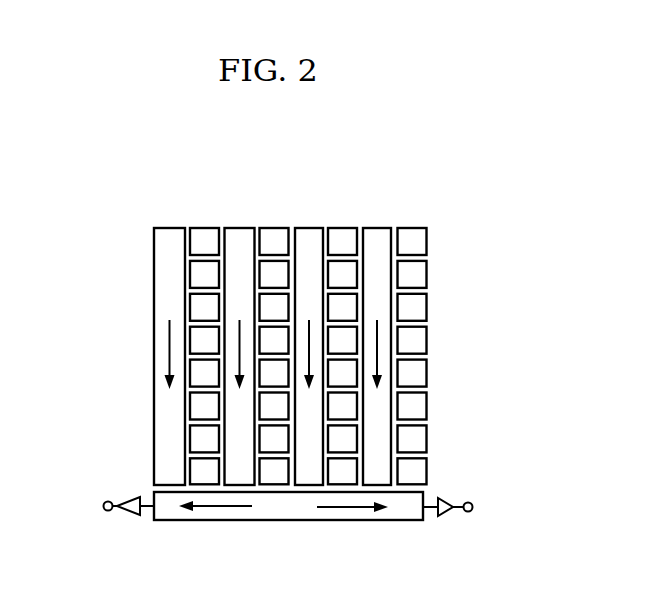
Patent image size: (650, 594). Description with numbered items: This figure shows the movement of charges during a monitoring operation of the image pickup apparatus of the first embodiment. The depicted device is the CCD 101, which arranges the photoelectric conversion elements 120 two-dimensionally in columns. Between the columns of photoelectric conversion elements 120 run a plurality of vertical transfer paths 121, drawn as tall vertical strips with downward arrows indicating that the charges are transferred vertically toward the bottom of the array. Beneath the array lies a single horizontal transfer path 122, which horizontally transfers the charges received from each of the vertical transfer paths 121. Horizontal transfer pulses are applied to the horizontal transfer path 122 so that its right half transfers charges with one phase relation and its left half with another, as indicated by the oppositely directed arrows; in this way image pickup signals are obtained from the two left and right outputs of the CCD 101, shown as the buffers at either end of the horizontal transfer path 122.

The CCD 101 is at (440, 228).
The photoelectric conversion element 120 is at (203, 242).
The vertical transfer path 121 is at (173, 228).
The horizontal transfer path 122 is at (377, 520).